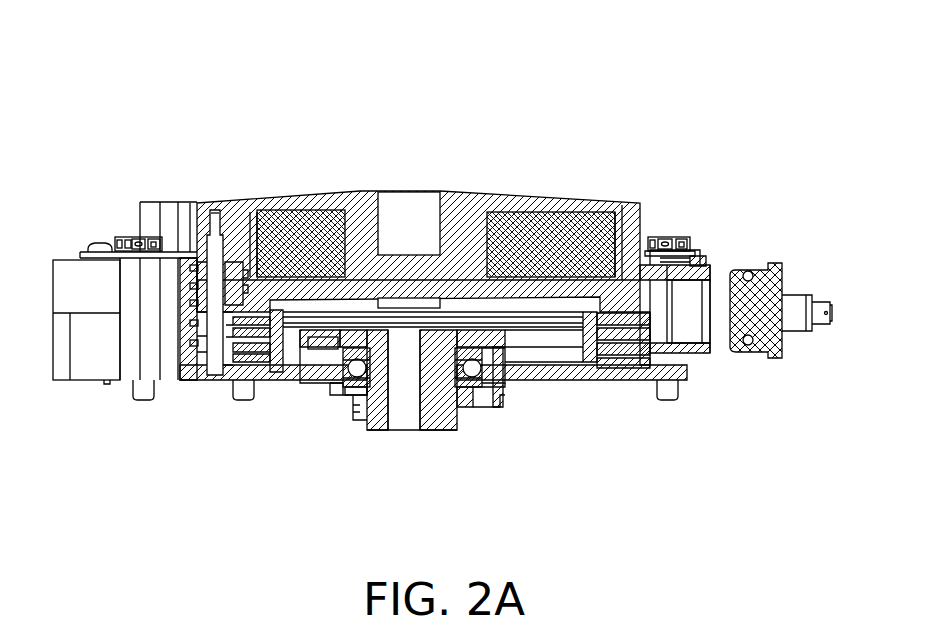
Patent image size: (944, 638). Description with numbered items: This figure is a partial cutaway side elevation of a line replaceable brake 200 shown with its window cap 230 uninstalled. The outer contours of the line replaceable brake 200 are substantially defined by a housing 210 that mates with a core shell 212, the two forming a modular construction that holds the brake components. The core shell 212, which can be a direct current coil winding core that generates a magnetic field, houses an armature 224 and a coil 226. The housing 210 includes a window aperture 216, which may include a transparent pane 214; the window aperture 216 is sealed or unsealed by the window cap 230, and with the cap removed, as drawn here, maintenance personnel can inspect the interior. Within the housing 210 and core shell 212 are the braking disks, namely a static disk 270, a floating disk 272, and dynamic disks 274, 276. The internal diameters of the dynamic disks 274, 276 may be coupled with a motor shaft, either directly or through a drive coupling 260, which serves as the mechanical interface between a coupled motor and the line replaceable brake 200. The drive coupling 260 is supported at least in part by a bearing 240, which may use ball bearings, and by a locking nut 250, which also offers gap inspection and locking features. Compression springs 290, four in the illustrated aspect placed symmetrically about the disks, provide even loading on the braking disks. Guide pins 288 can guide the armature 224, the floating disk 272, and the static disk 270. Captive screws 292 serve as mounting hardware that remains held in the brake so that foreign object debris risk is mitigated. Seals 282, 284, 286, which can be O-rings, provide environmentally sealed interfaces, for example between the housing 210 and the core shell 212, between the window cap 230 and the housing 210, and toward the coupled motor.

The line replaceable brake 200 is at (688, 55).
The housing 210 is at (123, 373).
The core shell 212 is at (140, 200).
The transparent pane 214 is at (672, 332).
The window aperture 216 is at (707, 313).
The armature 224 is at (433, 288).
The coil 226 is at (535, 232).
The window cap 230 is at (783, 264).
The bearing 240 is at (337, 380).
The locking nut 250 is at (367, 430).
The drive coupling 260 is at (427, 410).
The static disk 270 is at (620, 364).
The floating disk 272 is at (607, 335).
The dynamic disk 274 is at (590, 318).
The dynamic disk 276 is at (650, 348).
The seal 282 is at (704, 255).
The seal 284 is at (750, 270).
The seal 286 is at (193, 378).
The guide pin 288 is at (215, 214).
The compression spring 290 is at (183, 280).
The captive screw 292 is at (662, 236).